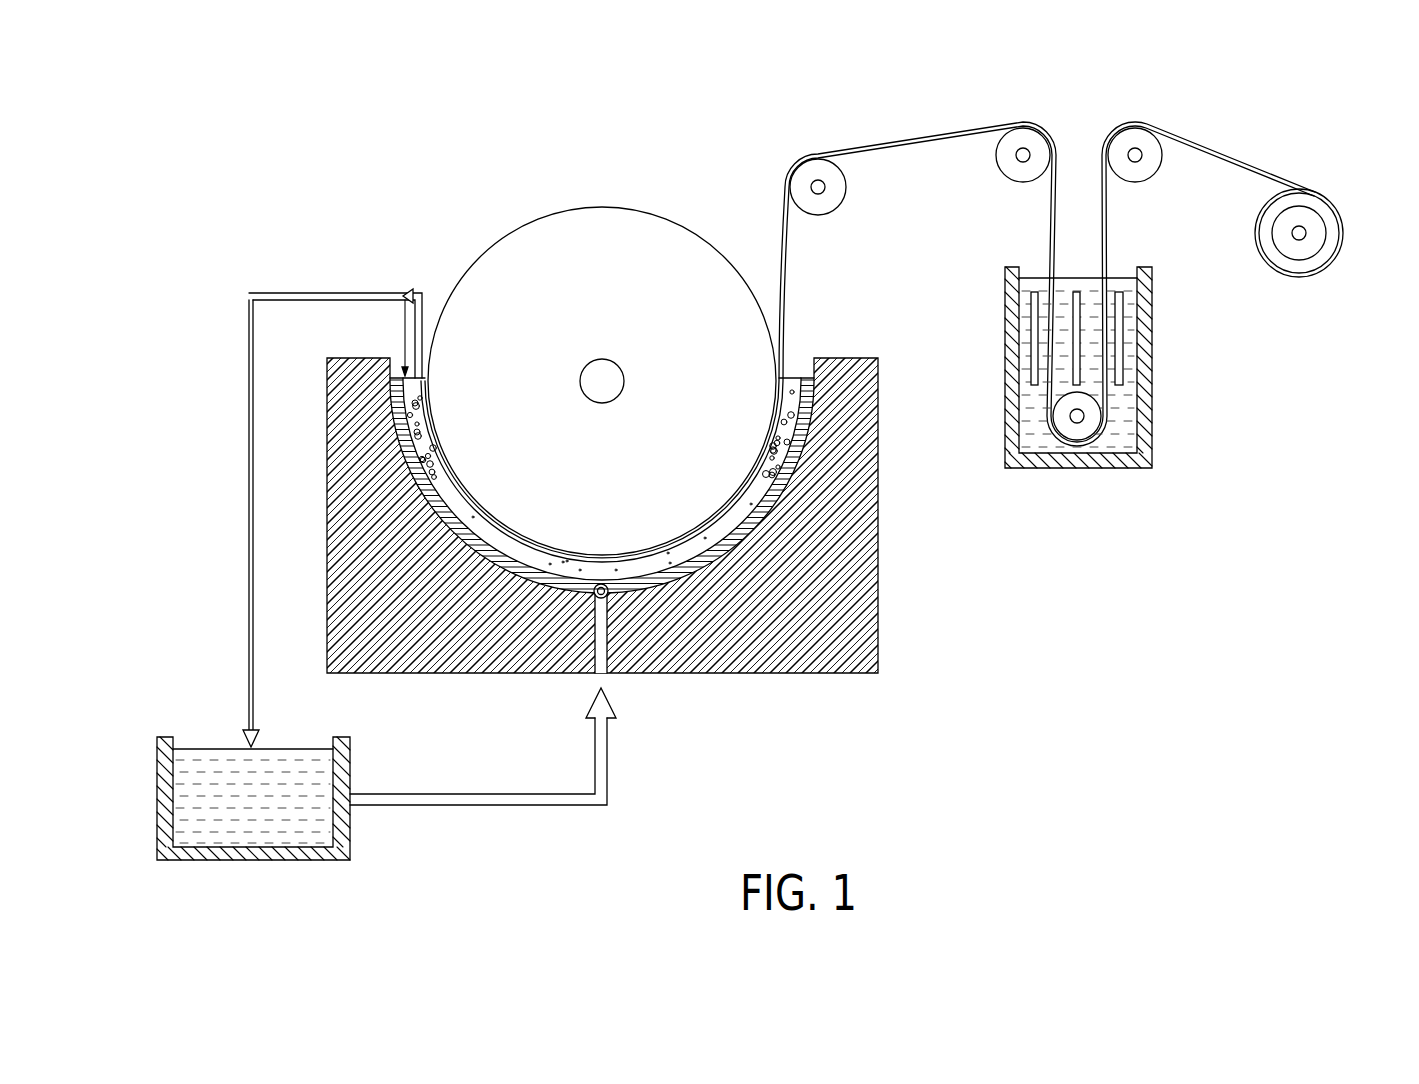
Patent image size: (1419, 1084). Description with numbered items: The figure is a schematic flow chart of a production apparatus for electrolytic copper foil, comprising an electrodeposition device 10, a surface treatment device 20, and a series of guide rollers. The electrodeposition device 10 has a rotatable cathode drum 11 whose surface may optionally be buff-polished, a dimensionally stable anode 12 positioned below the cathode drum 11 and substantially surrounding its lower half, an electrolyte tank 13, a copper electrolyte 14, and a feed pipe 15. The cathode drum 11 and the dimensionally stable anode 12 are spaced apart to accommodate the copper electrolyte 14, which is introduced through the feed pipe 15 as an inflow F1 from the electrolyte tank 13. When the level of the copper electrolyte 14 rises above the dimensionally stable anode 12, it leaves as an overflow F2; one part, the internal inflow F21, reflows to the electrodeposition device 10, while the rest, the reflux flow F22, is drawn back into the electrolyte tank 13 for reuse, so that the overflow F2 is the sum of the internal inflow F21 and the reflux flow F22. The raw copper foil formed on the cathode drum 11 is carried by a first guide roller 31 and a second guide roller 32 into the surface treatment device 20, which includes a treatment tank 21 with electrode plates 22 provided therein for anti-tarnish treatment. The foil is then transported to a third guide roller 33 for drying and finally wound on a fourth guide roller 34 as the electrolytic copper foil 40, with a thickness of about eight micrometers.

The electrodeposition device 10 is at (602, 333).
The cathode drum 11 is at (529, 192).
The dimensionally stable anode 12 is at (806, 378).
The electrolyte tank 13 is at (160, 793).
The copper electrolyte 14 is at (788, 368).
The feed pipe 15 is at (602, 676).
The surface treatment device 20 is at (1118, 336).
The treatment tank 21 is at (1152, 449).
The electrode plates 22 is at (1034, 290).
The first guide roller 31 is at (815, 166).
The second guide roller 32 is at (1024, 138).
The third guide roller 33 is at (1134, 138).
The fourth guide roller 34 is at (1305, 254).
The electrolytic copper foil 40 is at (1322, 218).
The inflow F1 is at (607, 758).
The overflow F2 is at (417, 292).
The internal inflow F21 is at (405, 330).
The reflux flow F22 is at (250, 577).